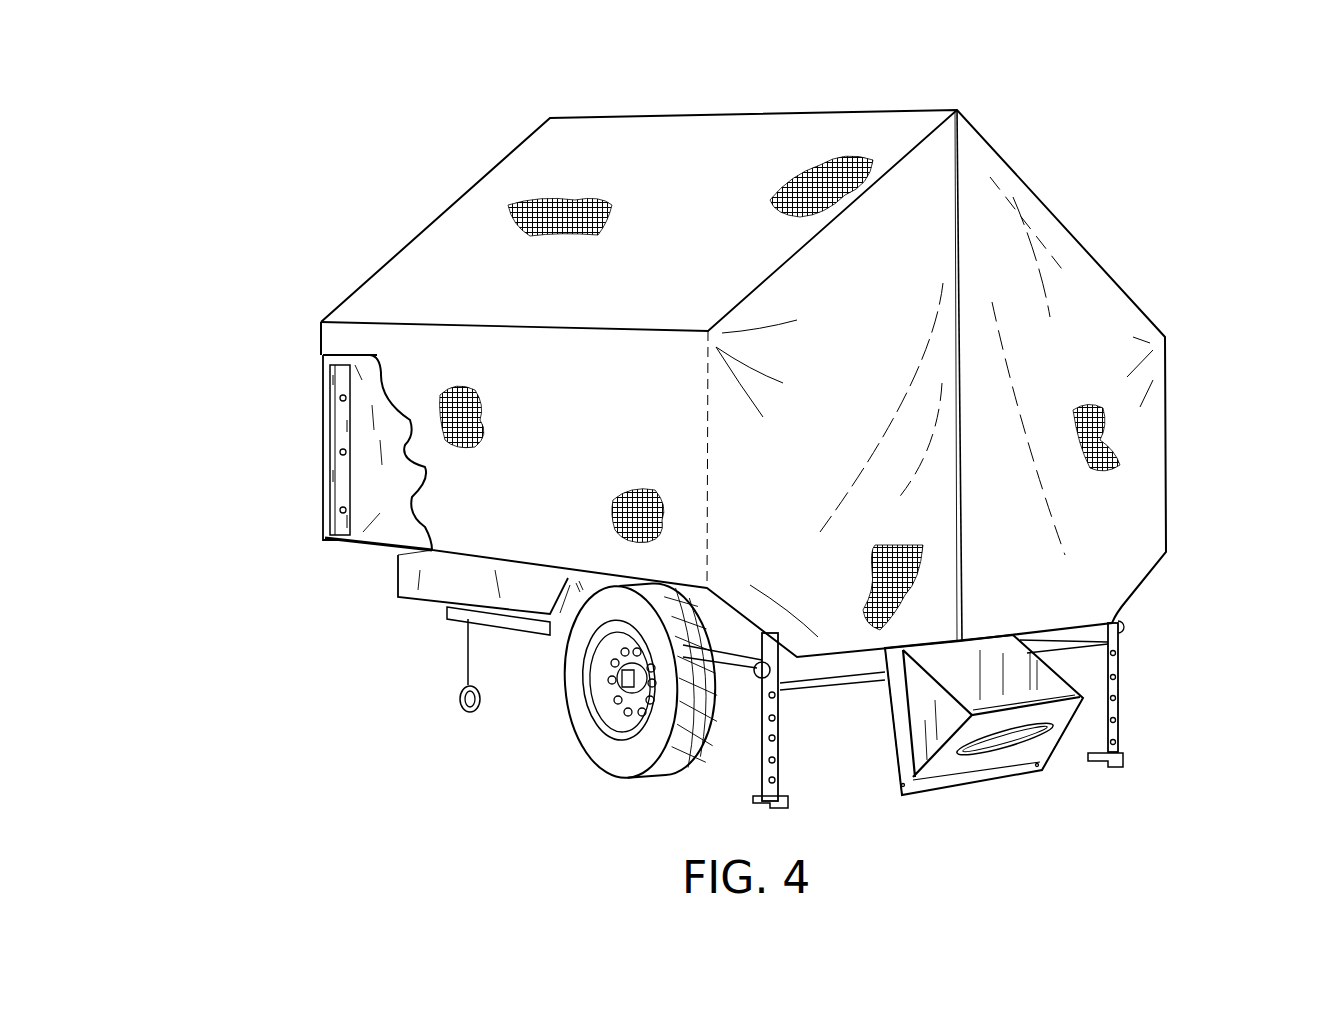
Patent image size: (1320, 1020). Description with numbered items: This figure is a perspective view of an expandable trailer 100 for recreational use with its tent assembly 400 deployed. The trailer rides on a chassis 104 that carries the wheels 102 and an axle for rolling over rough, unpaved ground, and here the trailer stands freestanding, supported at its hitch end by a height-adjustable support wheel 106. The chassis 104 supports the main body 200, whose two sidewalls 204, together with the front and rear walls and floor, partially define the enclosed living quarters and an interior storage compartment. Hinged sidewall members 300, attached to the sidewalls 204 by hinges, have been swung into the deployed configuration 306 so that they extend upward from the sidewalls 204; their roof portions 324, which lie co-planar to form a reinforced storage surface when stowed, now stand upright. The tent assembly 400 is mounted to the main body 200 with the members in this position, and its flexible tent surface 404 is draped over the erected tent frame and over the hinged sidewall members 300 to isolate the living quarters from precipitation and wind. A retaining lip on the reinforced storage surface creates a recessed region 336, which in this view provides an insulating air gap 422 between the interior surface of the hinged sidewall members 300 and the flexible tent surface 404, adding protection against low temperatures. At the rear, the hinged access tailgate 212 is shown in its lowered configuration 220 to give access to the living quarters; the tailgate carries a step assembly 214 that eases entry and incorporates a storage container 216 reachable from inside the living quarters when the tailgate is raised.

The expandable trailer 100 is at (1196, 112).
The wheels 102 is at (618, 758).
The chassis 104 is at (527, 627).
The height-adjustable support wheel 106 is at (453, 688).
The main body 200 is at (380, 586).
The sidewalls 204 is at (428, 587).
The hinged access tailgate 212 is at (1060, 723).
The step assembly 214 is at (987, 745).
The storage container 216 is at (1016, 740).
The lowered configuration 220 is at (1017, 748).
The hinged sidewall members 300 is at (320, 417).
The deployed configuration 306 is at (1027, 110).
The roof portions 324 is at (364, 455).
The recessed region 336 is at (358, 390).
The tent assembly 400 is at (492, 136).
The flexible tent surface 404 is at (740, 140).
The insulating air gap 422 is at (355, 545).